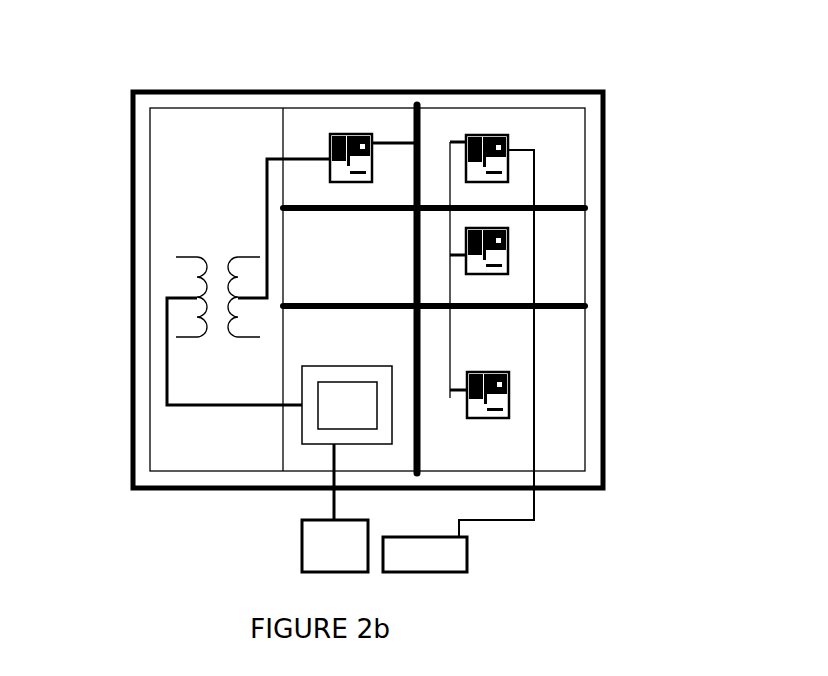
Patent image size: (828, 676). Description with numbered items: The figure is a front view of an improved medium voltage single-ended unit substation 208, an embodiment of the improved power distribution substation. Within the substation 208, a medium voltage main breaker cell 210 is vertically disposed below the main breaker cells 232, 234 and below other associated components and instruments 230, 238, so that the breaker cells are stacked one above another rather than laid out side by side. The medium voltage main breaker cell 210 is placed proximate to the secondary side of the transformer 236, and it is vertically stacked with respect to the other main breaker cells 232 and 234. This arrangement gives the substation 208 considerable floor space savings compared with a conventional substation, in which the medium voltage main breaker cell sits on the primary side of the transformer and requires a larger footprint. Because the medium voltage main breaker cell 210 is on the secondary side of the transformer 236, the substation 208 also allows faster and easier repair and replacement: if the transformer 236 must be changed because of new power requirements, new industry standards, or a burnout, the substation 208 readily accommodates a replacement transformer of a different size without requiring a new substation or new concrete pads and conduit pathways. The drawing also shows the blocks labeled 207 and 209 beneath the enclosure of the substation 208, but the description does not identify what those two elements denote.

The power supply 207 is at (317, 547).
The single-ended substation 208 is at (131, 590).
The control unit 209 is at (452, 553).
The medium voltage main breaker cell 210 is at (312, 422).
The associated components and instruments 230 is at (501, 160).
The main breaker cell 232 is at (358, 160).
The main breaker cell 234 is at (509, 388).
The transformer 236 is at (185, 273).
The associated components and instruments 238 is at (508, 251).